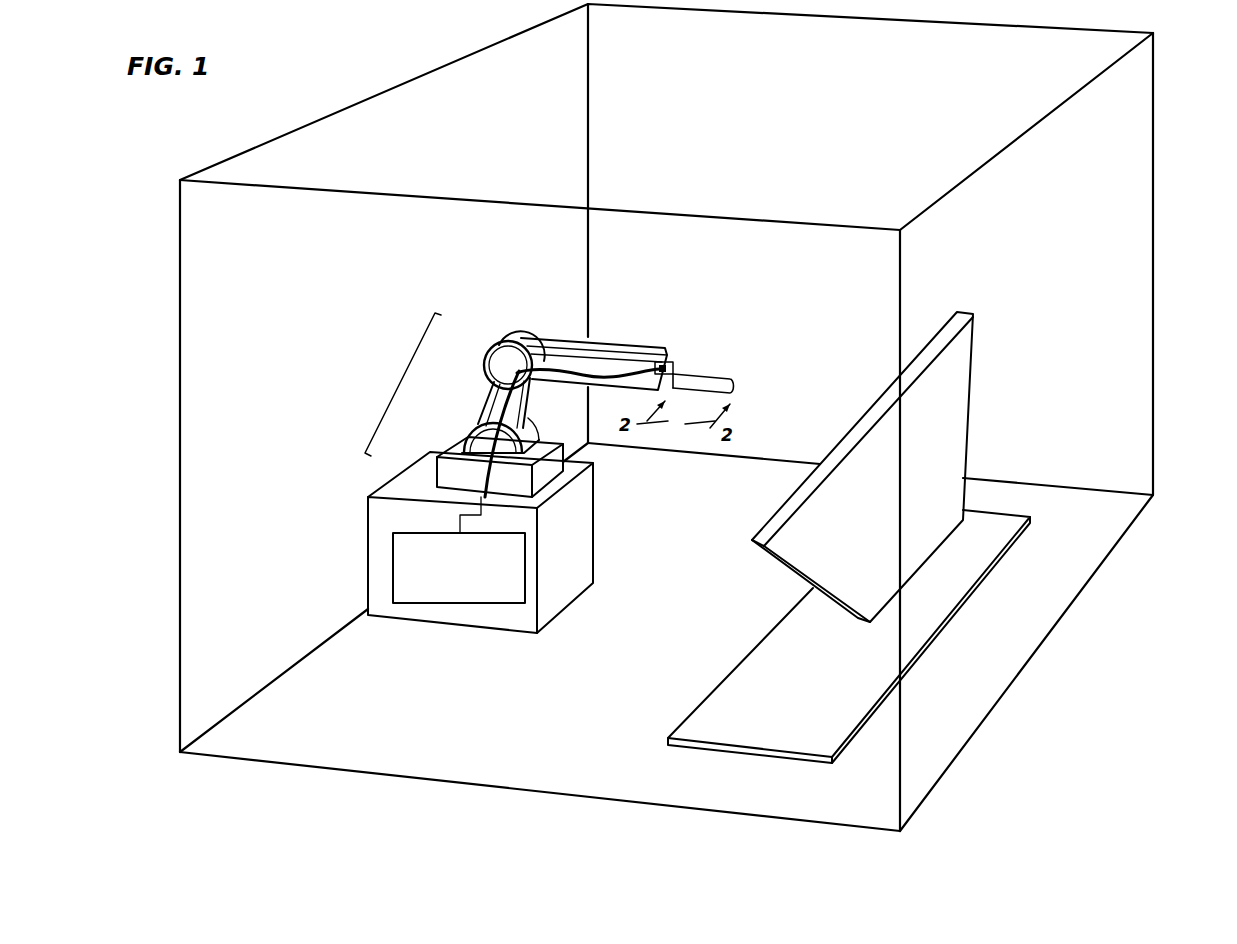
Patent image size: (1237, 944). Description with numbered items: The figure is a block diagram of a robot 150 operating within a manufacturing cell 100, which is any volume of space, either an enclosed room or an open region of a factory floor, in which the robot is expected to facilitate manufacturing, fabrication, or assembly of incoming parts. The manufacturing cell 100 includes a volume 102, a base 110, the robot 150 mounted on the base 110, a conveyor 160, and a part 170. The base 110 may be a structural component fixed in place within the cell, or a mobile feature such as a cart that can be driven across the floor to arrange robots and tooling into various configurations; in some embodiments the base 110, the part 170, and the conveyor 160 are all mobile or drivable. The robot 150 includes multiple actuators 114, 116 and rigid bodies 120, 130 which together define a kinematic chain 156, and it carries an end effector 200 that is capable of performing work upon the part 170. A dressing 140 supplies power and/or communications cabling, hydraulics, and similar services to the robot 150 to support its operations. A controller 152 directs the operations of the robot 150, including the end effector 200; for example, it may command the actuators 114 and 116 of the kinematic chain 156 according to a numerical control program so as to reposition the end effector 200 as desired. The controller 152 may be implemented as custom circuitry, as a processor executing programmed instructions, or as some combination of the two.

The manufacturing cell 100 is at (1153, 125).
The volume 102 is at (1172, 312).
The base 110 is at (511, 535).
The actuator 114 is at (473, 428).
The actuator 116 is at (521, 337).
The rigid body 120 is at (488, 398).
The rigid body 130 is at (640, 343).
The dressing 140 is at (617, 381).
The robot 150 is at (574, 389).
The controller 152 is at (459, 568).
The kinematic chain 156 is at (404, 375).
The conveyor 160 is at (923, 615).
The part 170 is at (945, 418).
The end effector 200 is at (720, 376).